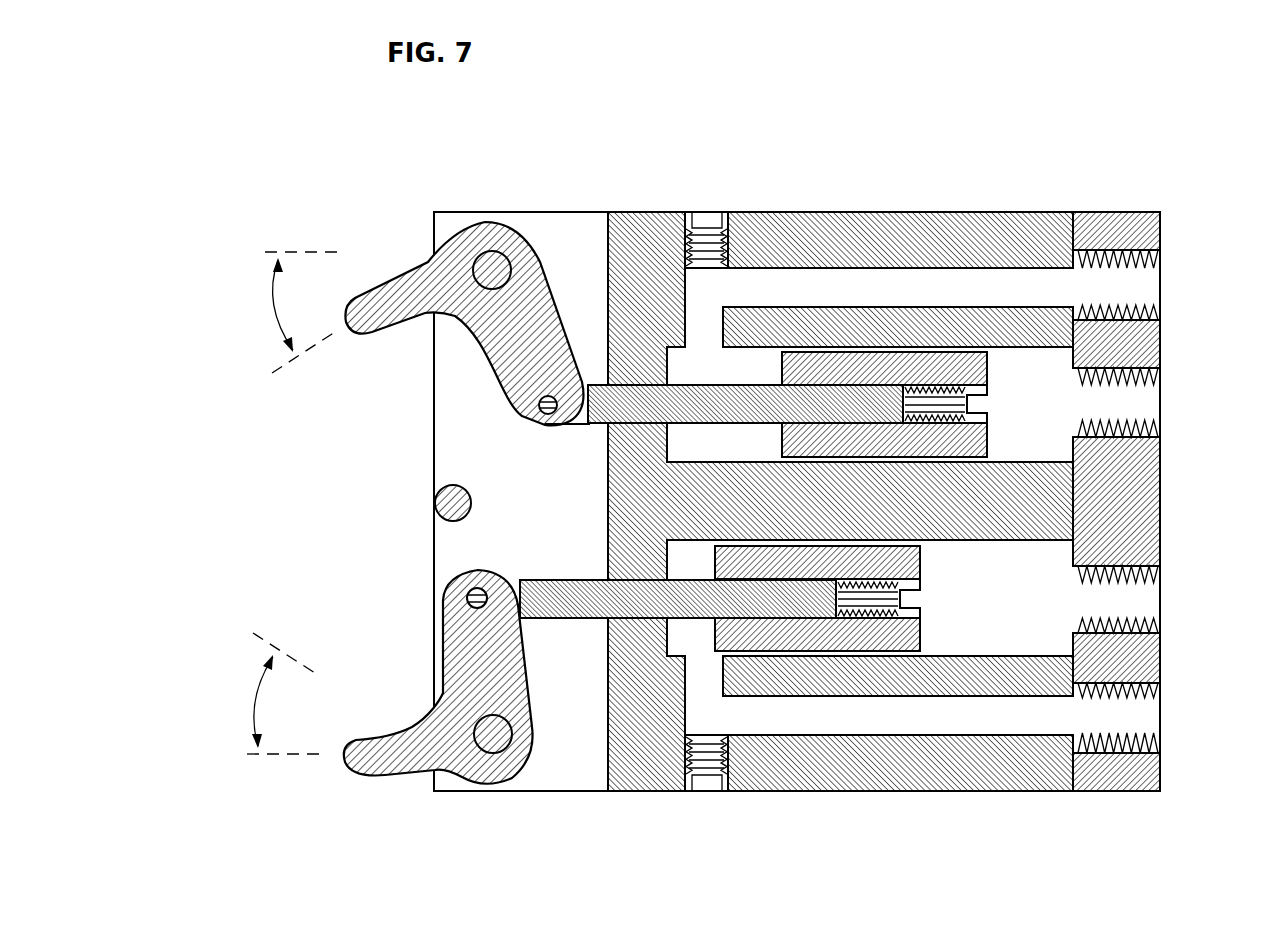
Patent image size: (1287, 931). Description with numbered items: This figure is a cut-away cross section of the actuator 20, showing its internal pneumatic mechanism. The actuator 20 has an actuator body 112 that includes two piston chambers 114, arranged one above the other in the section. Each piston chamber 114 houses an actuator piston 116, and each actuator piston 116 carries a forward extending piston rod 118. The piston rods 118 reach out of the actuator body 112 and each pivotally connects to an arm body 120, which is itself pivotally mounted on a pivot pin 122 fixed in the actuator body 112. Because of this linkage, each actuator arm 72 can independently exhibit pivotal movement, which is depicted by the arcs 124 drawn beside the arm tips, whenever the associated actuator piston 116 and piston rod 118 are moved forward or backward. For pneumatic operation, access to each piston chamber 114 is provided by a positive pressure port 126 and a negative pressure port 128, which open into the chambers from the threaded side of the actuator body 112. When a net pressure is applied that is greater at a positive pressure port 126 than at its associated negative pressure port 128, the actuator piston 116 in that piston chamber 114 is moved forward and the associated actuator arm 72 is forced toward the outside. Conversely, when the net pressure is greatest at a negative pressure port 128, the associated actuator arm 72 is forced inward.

The actuator 20 is at (834, 126).
The actuator arm 72 is at (362, 297).
The actuator body 112 is at (800, 792).
The piston chamber 114 is at (1033, 366).
The actuator piston 116 is at (845, 352).
The piston rod 118 is at (598, 425).
The arm body 120 is at (510, 348).
The pivot pin 122 is at (492, 262).
The arc 124 is at (275, 318).
The positive pressure port 126 is at (1146, 402).
The negative pressure port 128 is at (1146, 287).